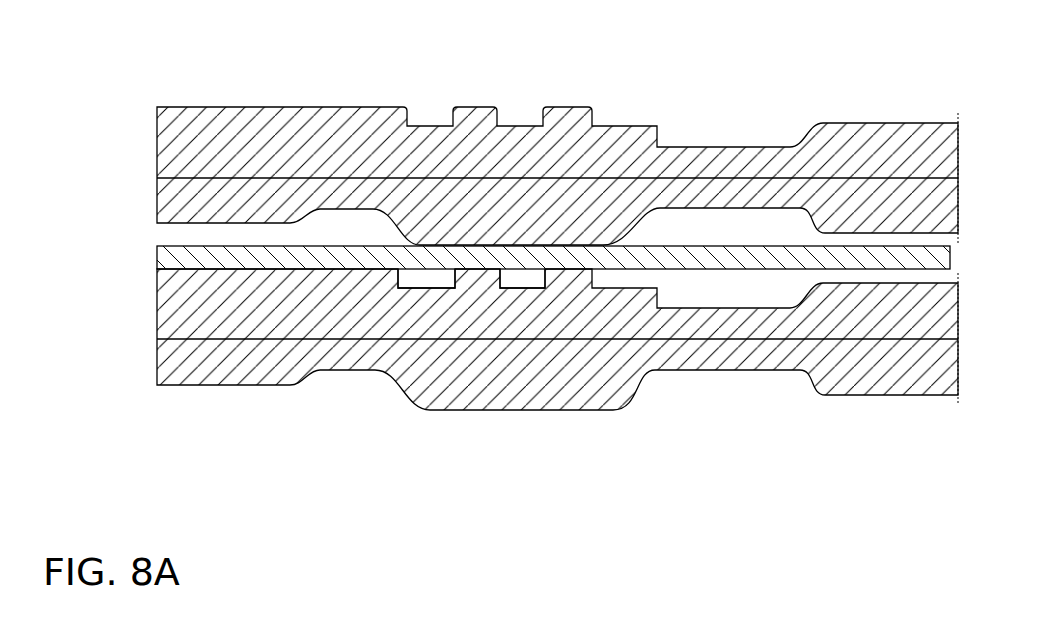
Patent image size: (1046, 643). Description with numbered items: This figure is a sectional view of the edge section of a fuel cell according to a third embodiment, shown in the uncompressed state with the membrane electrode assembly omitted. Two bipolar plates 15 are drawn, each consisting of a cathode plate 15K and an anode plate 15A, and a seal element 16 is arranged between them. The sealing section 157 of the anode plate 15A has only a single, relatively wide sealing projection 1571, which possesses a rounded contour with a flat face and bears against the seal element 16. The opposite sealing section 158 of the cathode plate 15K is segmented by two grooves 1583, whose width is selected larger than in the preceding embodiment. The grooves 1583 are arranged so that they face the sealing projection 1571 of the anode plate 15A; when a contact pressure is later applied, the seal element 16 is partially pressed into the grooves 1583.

The bipolar plate 15 is at (93, 133).
The cathode plate 15K is at (172, 146).
The anode plate 15A is at (172, 199).
The seal element 16 is at (172, 257).
The sealing section 157 is at (657, 460).
The sealing section 158 is at (657, 95).
The sealing projection 1571 is at (593, 231).
The groove 1583 is at (425, 281).